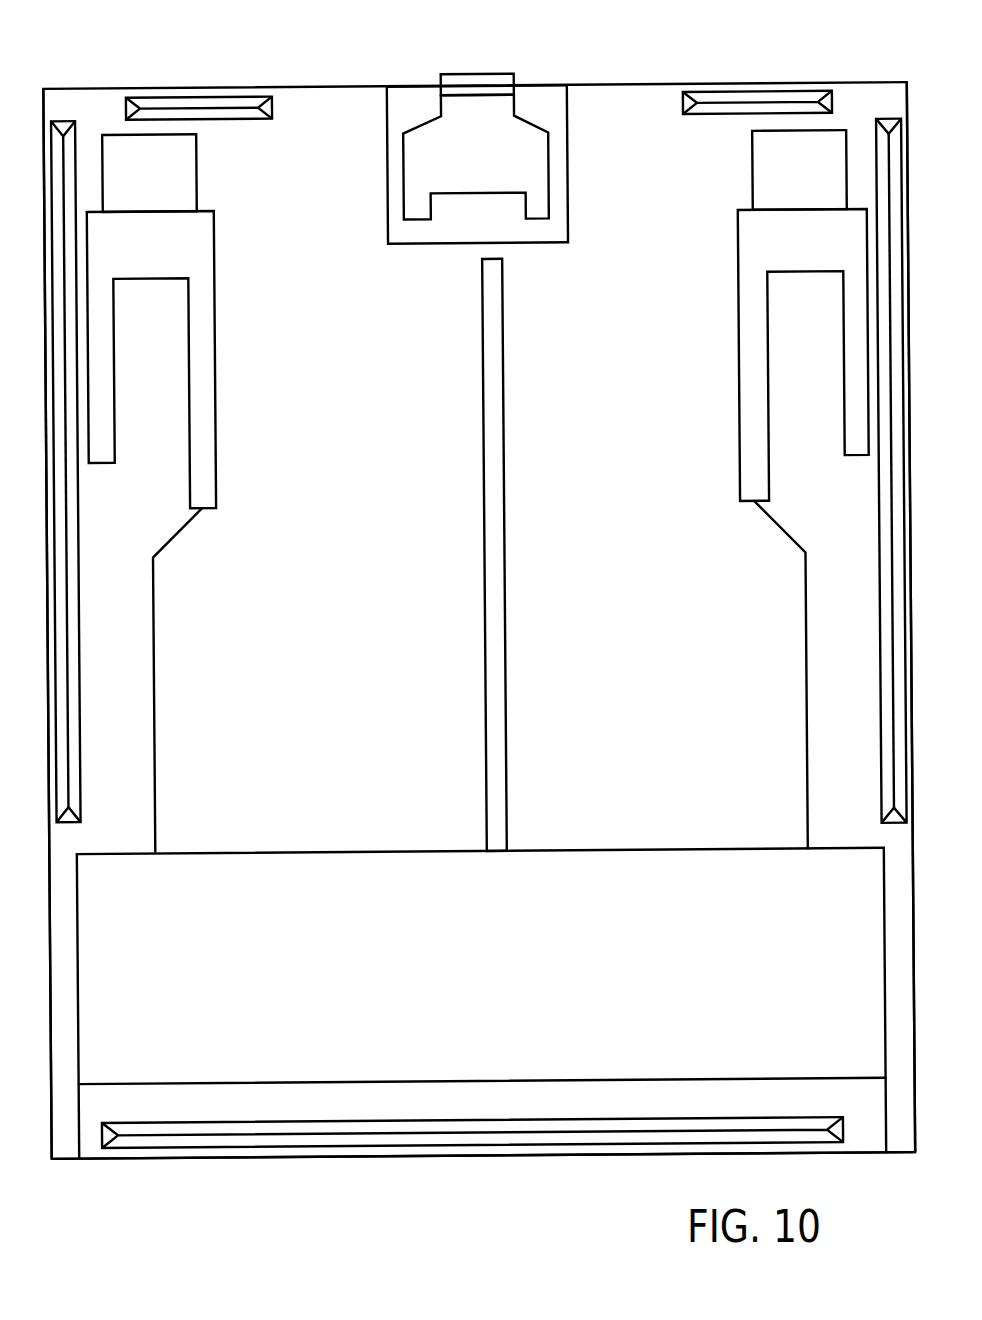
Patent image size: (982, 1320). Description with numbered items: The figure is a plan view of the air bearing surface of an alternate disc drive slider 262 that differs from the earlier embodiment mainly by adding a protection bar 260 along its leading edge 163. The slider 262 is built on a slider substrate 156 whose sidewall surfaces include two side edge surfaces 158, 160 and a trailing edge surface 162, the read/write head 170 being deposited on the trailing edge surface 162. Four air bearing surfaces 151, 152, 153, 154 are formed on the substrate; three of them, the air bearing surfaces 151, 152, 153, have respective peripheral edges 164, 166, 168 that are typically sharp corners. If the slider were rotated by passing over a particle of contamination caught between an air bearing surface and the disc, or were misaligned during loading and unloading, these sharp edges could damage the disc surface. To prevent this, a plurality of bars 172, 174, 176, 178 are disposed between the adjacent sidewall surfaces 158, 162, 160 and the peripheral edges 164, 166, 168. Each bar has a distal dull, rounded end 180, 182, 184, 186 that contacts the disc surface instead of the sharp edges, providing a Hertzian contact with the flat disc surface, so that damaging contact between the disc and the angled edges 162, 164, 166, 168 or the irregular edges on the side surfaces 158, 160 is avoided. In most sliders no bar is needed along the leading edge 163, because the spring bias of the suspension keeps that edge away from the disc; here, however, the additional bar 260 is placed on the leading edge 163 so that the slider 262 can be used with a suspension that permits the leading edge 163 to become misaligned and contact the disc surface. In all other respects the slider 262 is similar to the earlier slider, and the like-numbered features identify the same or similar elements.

The air bearing surface 151 is at (135, 241).
The air bearing surface 152 is at (462, 168).
The air bearing surface 153 is at (782, 246).
The air bearing surface 154 is at (417, 976).
The slider substrate 156 is at (368, 536).
The side edge surface 158 is at (48, 844).
The side edge surface 160 is at (911, 852).
The trailing edge surface 162 is at (314, 86).
The leading edge 163 is at (386, 1157).
The peripheral edge 164 is at (90, 342).
The peripheral edge 166 is at (489, 95).
The peripheral edge 168 is at (869, 343).
The read/write head 170 is at (481, 73).
The bar 172 is at (78, 617).
The bar 174 is at (186, 96).
The bar 176 is at (756, 94).
The bar 178 is at (880, 598).
The dull rounded end 180 is at (67, 784).
The dull rounded end 182 is at (207, 106).
The dull rounded end 184 is at (787, 105).
The dull rounded end 186 is at (891, 771).
The bar 260 is at (489, 1146).
The disc drive slider 262 is at (159, 1174).